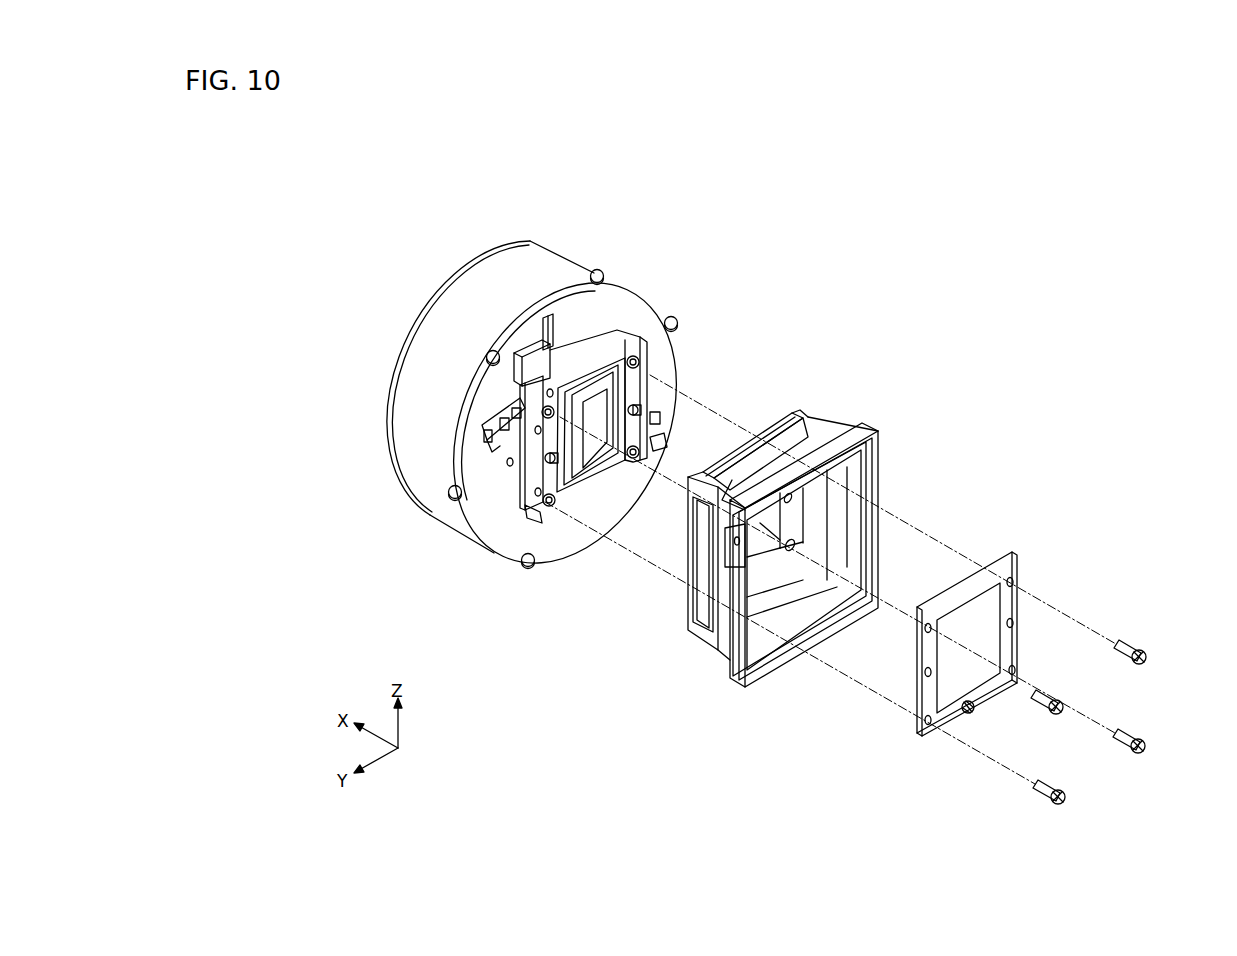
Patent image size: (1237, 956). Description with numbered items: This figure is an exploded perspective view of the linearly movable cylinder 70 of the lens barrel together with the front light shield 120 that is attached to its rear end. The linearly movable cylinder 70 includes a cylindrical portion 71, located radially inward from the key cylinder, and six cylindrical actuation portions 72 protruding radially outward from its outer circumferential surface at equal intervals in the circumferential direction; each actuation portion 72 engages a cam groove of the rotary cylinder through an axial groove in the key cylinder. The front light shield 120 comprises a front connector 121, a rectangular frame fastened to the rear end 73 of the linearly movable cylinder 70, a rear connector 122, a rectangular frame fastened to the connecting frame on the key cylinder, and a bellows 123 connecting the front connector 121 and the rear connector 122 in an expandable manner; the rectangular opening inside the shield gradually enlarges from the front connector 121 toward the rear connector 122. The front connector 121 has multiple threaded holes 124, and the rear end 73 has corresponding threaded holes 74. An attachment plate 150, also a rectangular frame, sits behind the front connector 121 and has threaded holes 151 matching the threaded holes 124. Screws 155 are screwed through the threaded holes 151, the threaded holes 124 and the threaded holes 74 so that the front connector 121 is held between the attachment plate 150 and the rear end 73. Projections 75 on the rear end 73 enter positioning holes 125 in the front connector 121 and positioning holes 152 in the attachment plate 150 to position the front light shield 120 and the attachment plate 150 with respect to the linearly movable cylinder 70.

The linearly movable cylinder 70 is at (642, 212).
The cylindrical portion 71 is at (498, 290).
The cylindrical actuation portion 72 is at (597, 270).
The rear end 73 is at (522, 518).
The threaded hole 74 is at (541, 411).
The projection 75 is at (640, 410).
The front light shield 120 is at (858, 403).
The front connector 121 is at (705, 630).
The rear connector 122 is at (796, 675).
The bellows 123 is at (850, 473).
The threaded hole 124 is at (823, 590).
The positioning hole 125 is at (797, 503).
The attachment plate 150 is at (1012, 560).
The threaded hole 151 is at (927, 624).
The positioning hole 152 is at (1017, 626).
The screw 155 is at (1148, 652).